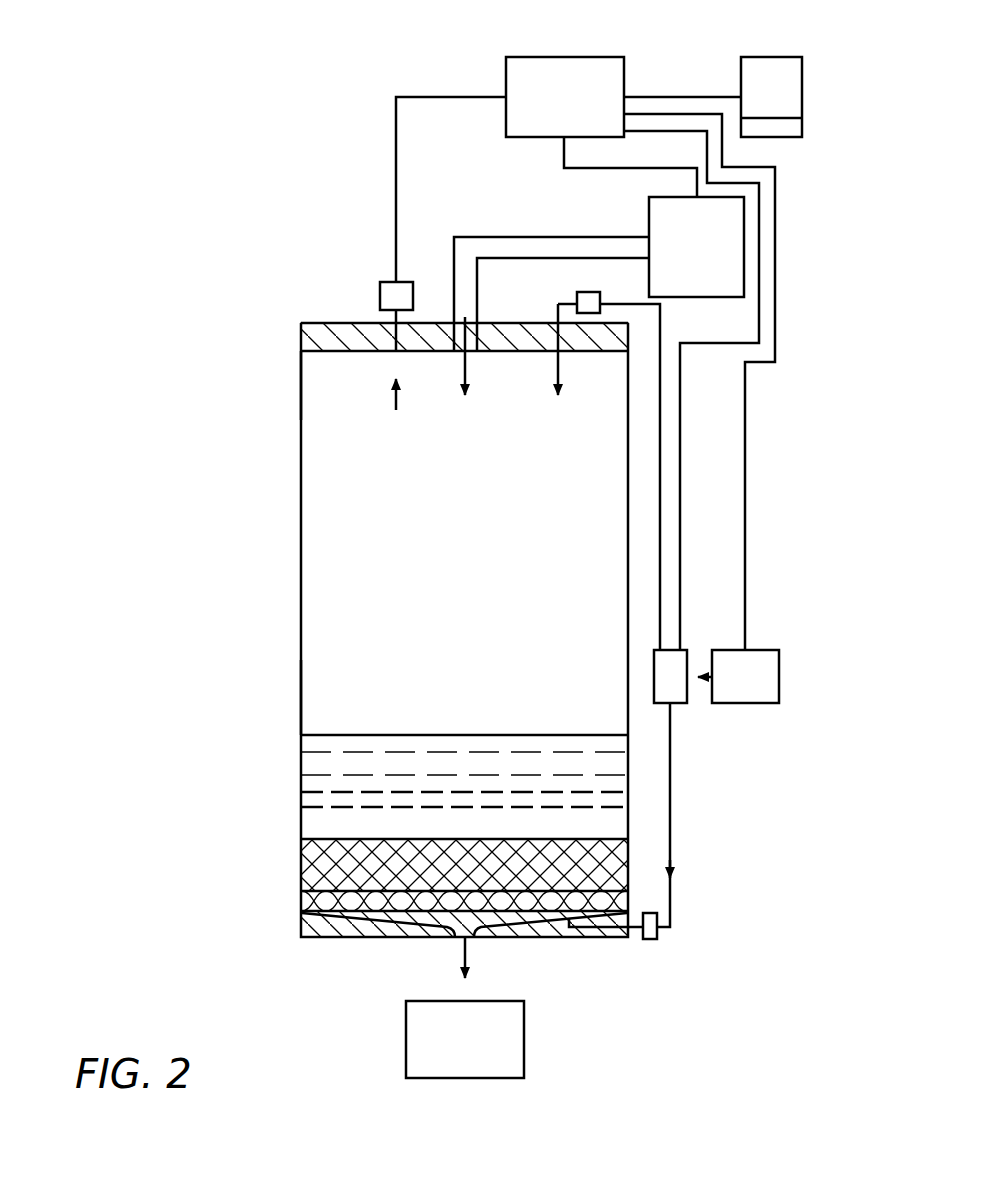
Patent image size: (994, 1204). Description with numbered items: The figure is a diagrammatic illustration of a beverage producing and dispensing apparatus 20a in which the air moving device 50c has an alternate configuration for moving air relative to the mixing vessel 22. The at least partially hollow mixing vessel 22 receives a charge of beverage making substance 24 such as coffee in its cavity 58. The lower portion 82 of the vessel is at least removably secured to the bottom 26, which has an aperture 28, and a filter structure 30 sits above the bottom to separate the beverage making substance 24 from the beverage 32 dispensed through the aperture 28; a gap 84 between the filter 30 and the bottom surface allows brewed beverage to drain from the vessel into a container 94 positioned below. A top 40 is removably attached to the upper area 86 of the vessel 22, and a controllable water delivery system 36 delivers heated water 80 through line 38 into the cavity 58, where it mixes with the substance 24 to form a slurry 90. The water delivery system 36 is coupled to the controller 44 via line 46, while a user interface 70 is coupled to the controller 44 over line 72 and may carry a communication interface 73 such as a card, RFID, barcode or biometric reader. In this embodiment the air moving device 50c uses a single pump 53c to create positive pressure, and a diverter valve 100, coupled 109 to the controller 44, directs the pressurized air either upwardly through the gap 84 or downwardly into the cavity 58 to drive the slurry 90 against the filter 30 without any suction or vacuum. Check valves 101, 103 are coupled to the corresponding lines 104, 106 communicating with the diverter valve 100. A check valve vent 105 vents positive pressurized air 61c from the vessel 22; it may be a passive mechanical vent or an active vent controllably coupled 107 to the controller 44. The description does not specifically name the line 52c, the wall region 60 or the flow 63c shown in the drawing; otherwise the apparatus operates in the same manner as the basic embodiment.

The beverage producing apparatus 20a is at (162, 593).
The mixing vessel 22 is at (296, 651).
The beverage making substance 24 is at (322, 862).
The bottom 26 is at (285, 920).
The aperture 28 is at (455, 936).
The filter structure 30 is at (285, 889).
The beverage 32 is at (460, 965).
The water delivery system 36 is at (662, 218).
The water delivery line 38 is at (480, 235).
The top 40 is at (296, 327).
The controller 44 is at (516, 83).
The line 46 is at (562, 156).
The air moving device 50c is at (735, 738).
The supply line 52c is at (745, 435).
The pump 53c is at (762, 660).
The cavity 58 is at (489, 517).
The side wall 60 is at (298, 698).
The positive pressurized air 61c is at (395, 368).
The inlet 63c is at (560, 377).
The user interface 70 is at (767, 56).
The line 72 is at (683, 96).
The communication interface 73 is at (783, 138).
The water 80 is at (315, 786).
The lower portion 82 is at (285, 909).
The gap 84 is at (518, 920).
The upper area 86 is at (294, 367).
The slurry 90 is at (296, 826).
The container 94 is at (540, 1044).
The diverter valve 100 is at (673, 692).
The check valve 101 is at (577, 297).
The check valve 103 is at (650, 942).
The line 104 is at (662, 313).
The check valve vent 105 is at (380, 297).
The line 106 is at (672, 870).
The coupling 107 is at (395, 190).
The coupling 109 is at (681, 537).